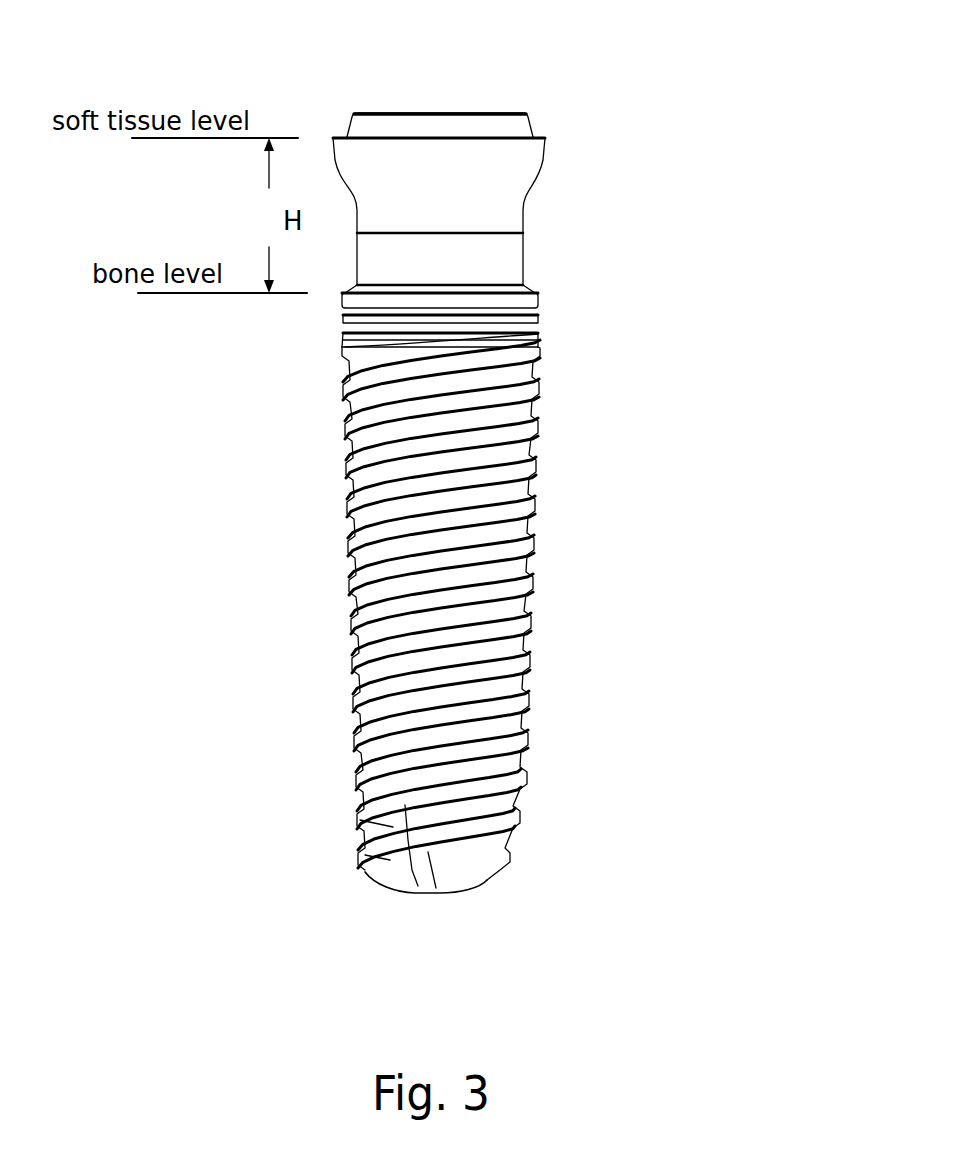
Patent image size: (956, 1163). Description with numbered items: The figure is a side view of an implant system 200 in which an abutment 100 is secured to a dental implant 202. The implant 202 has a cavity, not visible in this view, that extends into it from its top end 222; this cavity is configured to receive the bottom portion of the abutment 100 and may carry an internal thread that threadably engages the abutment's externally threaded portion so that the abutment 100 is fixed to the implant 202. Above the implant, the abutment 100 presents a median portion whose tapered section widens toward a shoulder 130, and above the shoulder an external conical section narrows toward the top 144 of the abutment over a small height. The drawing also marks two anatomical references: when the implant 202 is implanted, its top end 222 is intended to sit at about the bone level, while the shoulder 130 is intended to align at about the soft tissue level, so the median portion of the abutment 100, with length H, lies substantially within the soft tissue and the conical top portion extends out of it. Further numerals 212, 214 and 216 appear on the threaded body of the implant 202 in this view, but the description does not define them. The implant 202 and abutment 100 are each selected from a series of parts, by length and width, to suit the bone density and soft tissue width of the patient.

The abutment 100 is at (539, 167).
The shoulder 130 is at (537, 137).
The top 144 is at (472, 107).
The implant system 200 is at (663, 353).
The implant 202 is at (539, 465).
The thread crest 212 is at (340, 462).
The apical end with cutting flutes 214 is at (448, 892).
The thread flank 216 is at (338, 547).
The top end 222 is at (528, 294).